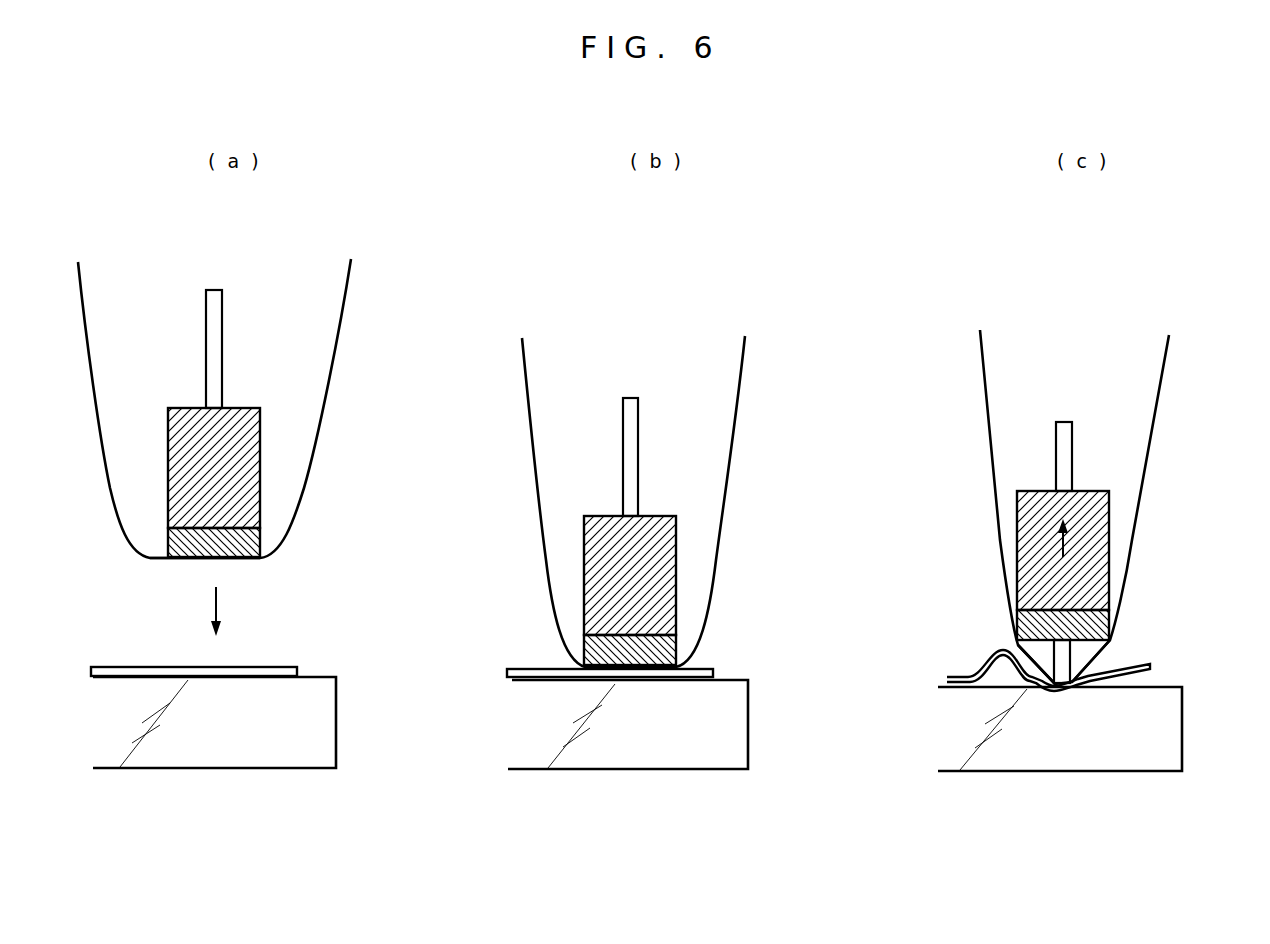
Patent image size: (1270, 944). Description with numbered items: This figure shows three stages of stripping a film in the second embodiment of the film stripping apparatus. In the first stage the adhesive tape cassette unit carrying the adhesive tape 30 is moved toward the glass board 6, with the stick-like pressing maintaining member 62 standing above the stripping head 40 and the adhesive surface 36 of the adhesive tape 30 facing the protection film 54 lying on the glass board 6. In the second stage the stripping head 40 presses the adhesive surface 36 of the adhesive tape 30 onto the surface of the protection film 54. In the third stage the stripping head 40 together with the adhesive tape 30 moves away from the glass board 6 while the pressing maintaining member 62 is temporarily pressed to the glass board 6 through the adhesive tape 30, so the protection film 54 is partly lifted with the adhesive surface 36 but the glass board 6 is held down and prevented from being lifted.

The adhesive tape 30 is at (88, 340).
The pressing maintaining member 62 is at (222, 320).
The stripping head 40 is at (230, 547).
The adhesive surface 36 is at (265, 557).
The protection film 54 is at (257, 667).
The glass board 6 is at (193, 753).